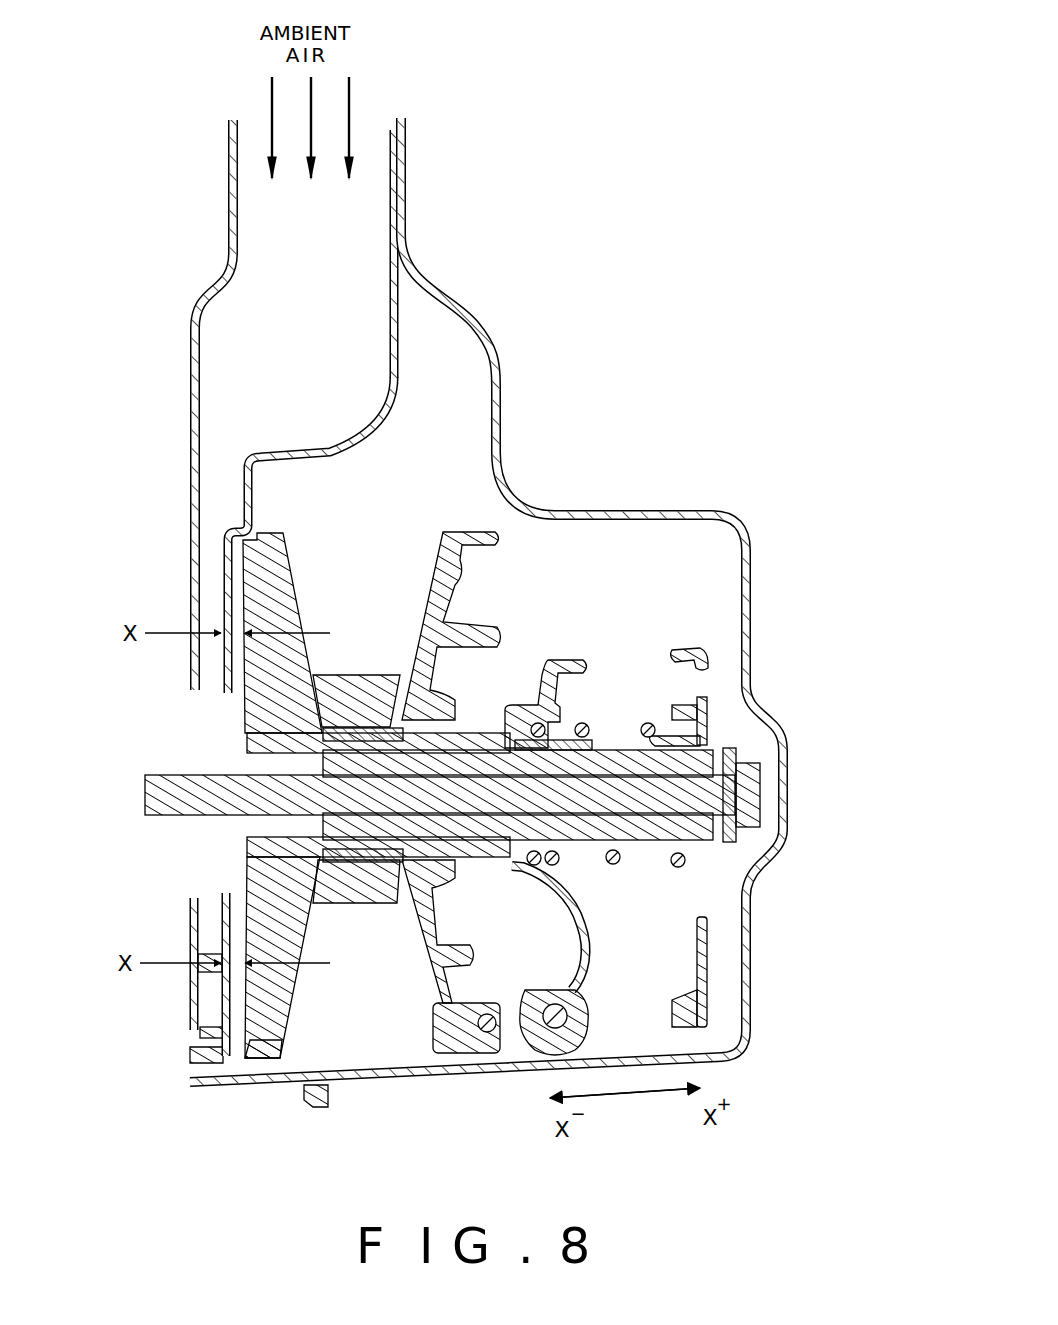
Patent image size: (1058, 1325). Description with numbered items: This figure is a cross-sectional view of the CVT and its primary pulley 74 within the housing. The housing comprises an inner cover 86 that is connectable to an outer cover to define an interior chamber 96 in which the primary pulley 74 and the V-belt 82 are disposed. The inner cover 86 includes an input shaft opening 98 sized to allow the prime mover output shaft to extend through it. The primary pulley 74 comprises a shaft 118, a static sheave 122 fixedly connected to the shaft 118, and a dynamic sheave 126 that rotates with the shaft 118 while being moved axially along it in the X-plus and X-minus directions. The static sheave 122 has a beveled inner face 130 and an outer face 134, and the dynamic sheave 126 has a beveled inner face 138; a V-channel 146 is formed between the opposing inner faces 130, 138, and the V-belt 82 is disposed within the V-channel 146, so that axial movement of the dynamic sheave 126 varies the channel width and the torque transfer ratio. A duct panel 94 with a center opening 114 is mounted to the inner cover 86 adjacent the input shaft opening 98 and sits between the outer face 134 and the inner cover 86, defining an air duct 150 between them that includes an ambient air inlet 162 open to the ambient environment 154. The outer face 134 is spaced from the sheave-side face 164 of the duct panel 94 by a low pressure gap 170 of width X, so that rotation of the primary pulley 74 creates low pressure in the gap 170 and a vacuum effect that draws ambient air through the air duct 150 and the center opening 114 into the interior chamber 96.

The primary pulley 74 is at (540, 530).
The V-belt 82 is at (383, 695).
The inner cover 86 is at (185, 430).
The duct panel 94 is at (370, 435).
The interior chamber 96 is at (580, 585).
The input shaft opening 98 is at (190, 690).
The center opening 114 is at (222, 893).
The shaft 118 is at (587, 853).
The static sheave 122 is at (272, 1043).
The dynamic sheave 126 is at (546, 631).
The beveled inner face 130 is at (288, 558).
The outer face 134 is at (245, 580).
The beveled inner face 138 is at (437, 563).
The V-channel 146 is at (345, 618).
The air duct 150 is at (282, 232).
The ambient environment 154 is at (466, 30).
The ambient air inlet 162 is at (407, 157).
The sheave-side face 164 is at (272, 1003).
The low pressure gap 170 is at (238, 690).